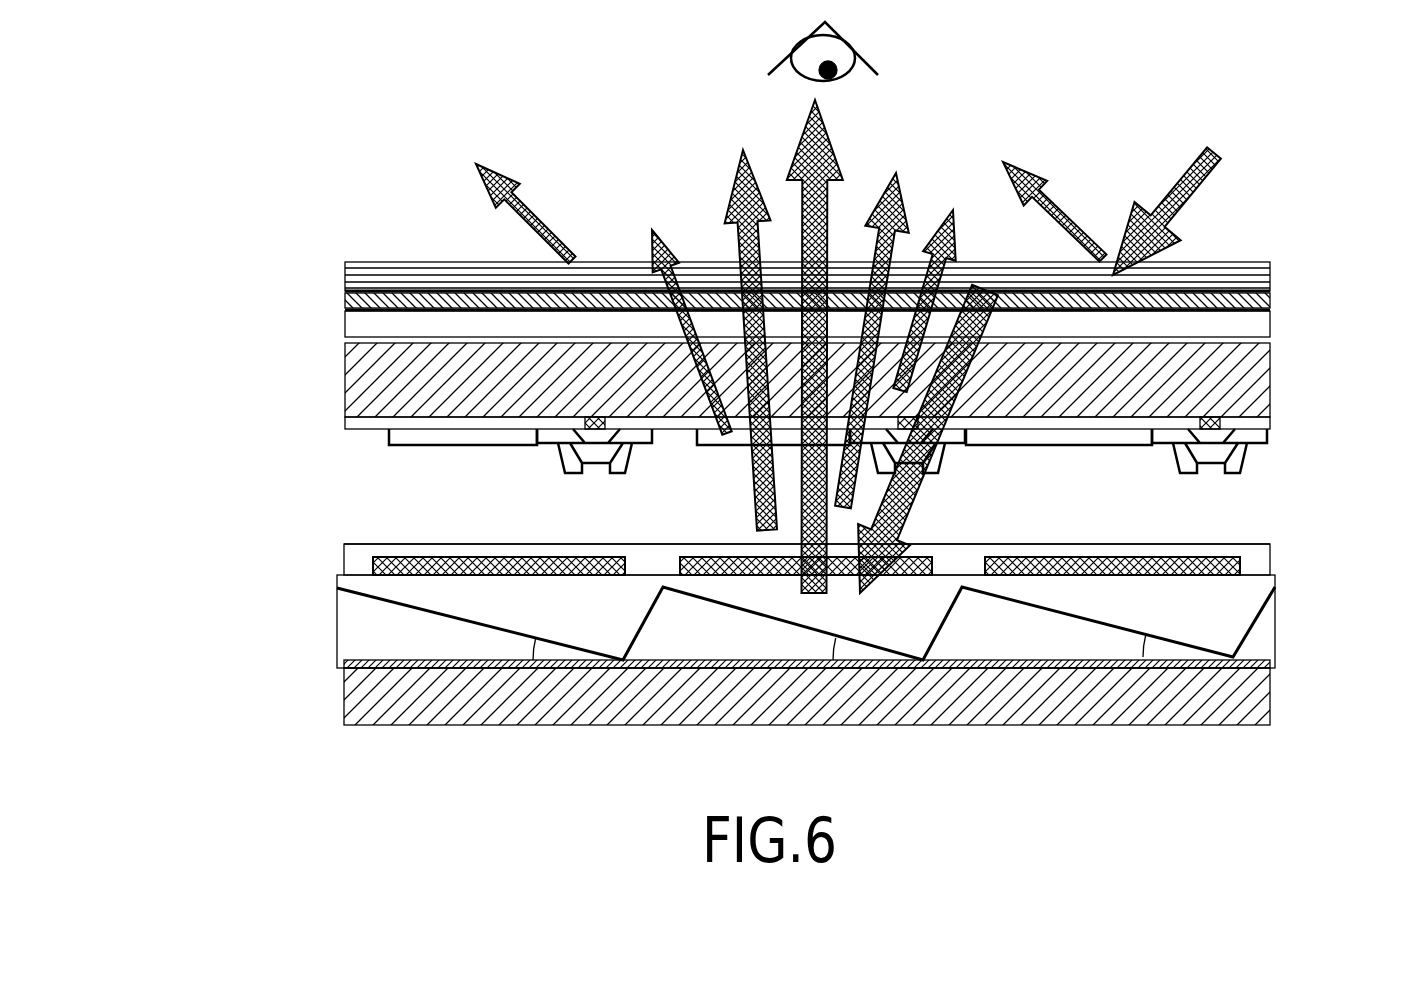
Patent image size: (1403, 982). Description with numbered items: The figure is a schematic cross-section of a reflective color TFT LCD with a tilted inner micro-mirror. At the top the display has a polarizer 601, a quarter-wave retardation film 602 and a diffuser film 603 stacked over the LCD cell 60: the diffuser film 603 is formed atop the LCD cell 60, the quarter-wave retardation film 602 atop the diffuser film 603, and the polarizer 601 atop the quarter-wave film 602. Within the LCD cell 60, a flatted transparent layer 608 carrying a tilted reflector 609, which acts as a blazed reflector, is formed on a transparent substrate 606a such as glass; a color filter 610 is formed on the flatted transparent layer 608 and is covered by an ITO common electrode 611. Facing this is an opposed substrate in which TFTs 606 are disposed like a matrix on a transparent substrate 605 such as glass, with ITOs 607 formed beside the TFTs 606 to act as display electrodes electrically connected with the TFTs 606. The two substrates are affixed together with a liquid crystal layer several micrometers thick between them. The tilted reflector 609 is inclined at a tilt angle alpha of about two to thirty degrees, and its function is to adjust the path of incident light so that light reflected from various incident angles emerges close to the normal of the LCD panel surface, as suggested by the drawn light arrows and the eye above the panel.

The LCD cell 60 is at (188, 357).
The polarizer 601 is at (1272, 267).
The quarter-wave retardation film 602 is at (1272, 302).
The diffuser film 603 is at (1272, 325).
The transparent substrate 605 is at (345, 385).
The TFTs 606 is at (1243, 452).
The ITOs 607 is at (430, 448).
The flatted transparent layer 608 is at (347, 573).
The tilted reflector 609 is at (1260, 623).
The color filter 610 is at (1235, 568).
The ITO common electrode 611 is at (1197, 543).
The transparent substrate 606a is at (363, 707).